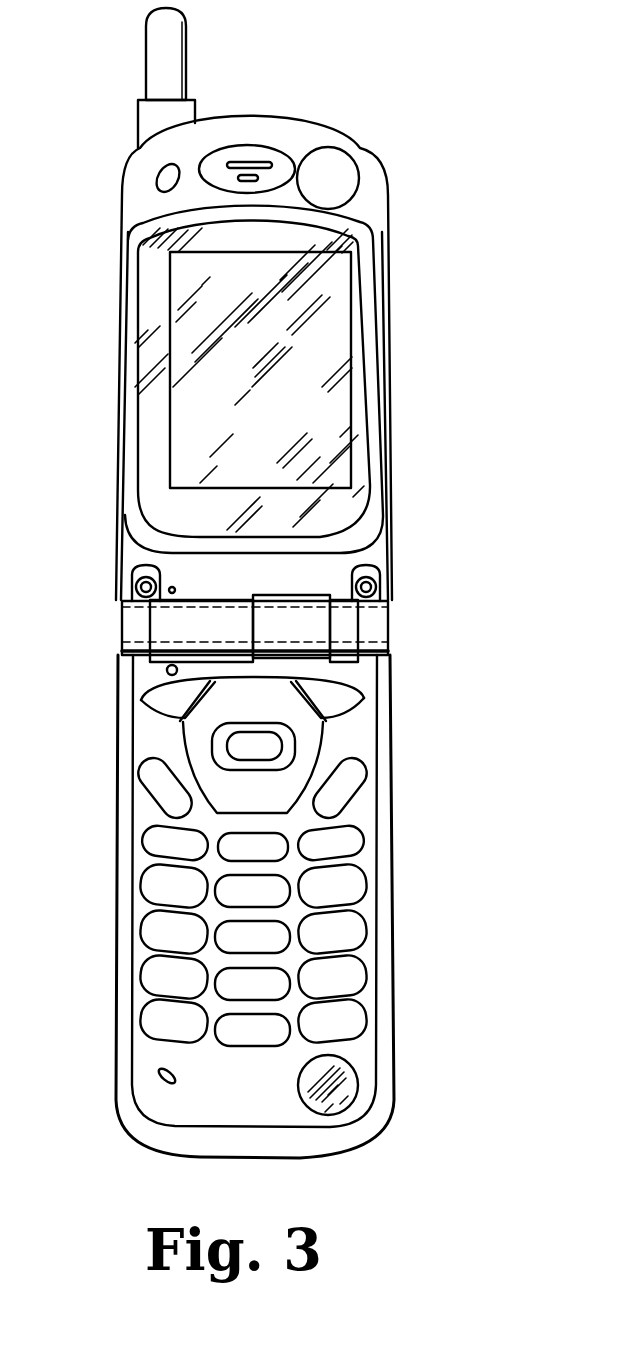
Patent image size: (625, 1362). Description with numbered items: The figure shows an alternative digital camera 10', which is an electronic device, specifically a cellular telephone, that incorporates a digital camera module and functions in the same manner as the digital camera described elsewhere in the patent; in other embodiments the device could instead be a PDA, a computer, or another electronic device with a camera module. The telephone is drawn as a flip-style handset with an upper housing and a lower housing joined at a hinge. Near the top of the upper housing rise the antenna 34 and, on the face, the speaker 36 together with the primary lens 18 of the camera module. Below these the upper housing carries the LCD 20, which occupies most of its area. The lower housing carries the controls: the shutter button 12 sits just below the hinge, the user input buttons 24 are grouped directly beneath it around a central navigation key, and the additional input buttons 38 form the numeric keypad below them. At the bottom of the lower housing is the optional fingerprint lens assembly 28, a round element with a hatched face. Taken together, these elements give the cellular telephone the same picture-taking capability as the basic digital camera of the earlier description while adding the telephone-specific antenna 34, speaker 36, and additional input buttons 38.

The digital camera 10' is at (334, 591).
The antenna 34 is at (160, 41).
The speaker 36 is at (256, 162).
The primary lens 18 is at (357, 193).
The LCD 20 is at (353, 372).
The shutter button 12 is at (170, 700).
The user input buttons 24 is at (405, 682).
The additional input buttons 38 is at (405, 832).
The fingerprint lens assembly 28 is at (332, 1090).